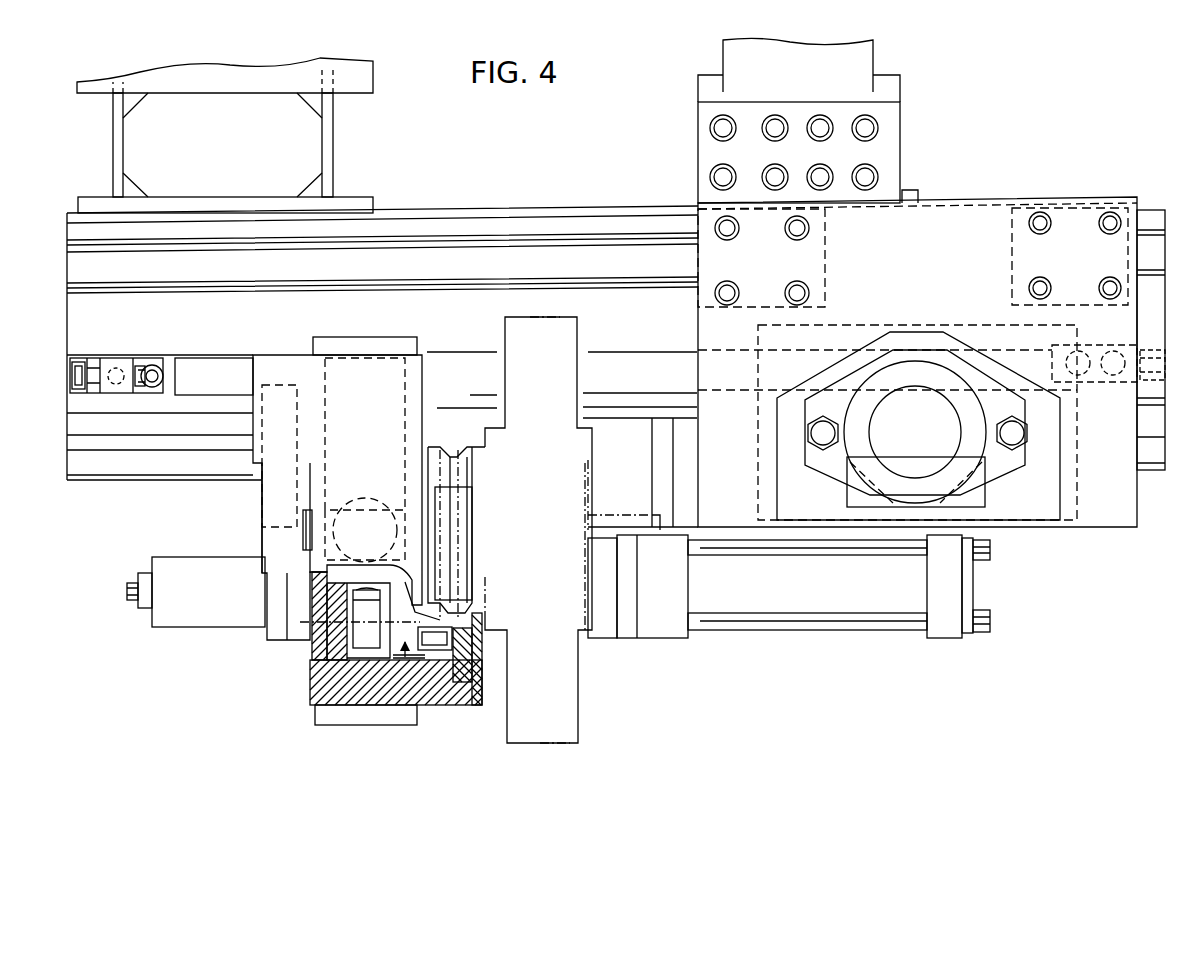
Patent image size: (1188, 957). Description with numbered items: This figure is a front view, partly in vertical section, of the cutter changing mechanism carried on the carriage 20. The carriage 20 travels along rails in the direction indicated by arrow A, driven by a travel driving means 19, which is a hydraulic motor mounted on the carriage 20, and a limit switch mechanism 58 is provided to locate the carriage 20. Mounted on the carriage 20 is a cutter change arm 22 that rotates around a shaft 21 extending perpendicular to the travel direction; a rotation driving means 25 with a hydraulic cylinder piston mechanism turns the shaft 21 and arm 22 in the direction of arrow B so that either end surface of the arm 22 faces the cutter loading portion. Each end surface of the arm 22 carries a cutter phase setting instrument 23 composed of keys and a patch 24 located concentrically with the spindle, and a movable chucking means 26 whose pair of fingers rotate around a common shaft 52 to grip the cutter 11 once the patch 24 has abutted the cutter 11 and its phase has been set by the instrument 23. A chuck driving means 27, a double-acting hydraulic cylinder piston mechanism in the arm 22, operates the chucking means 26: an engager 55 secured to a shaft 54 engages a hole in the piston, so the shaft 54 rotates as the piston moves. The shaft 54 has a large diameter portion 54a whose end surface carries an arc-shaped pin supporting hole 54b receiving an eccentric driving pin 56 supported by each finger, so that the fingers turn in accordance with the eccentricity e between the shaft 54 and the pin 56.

The cutter 11 is at (557, 705).
The travel driving means 19 is at (947, 450).
The carriage 20 is at (967, 232).
The shaft 21 is at (335, 523).
The cutter change arm 22 is at (302, 367).
The cutter phase setting instrument 23 is at (470, 590).
The patch 24 is at (303, 542).
The rotation driving means 25 is at (770, 587).
The movable chucking means 26 is at (258, 503).
The chuck driving means 27 is at (363, 375).
The common shaft 52 is at (452, 702).
The shaft 54 is at (315, 628).
The large diameter portion 54a is at (365, 434).
The pin supporting hole 54b is at (432, 652).
The engager 55 is at (362, 637).
The eccentric driving pin 56 is at (458, 703).
The limit switch mechanism 58 is at (888, 148).
The arrow A is at (390, 307).
The arrow B is at (423, 590).
The eccentricity e is at (400, 650).